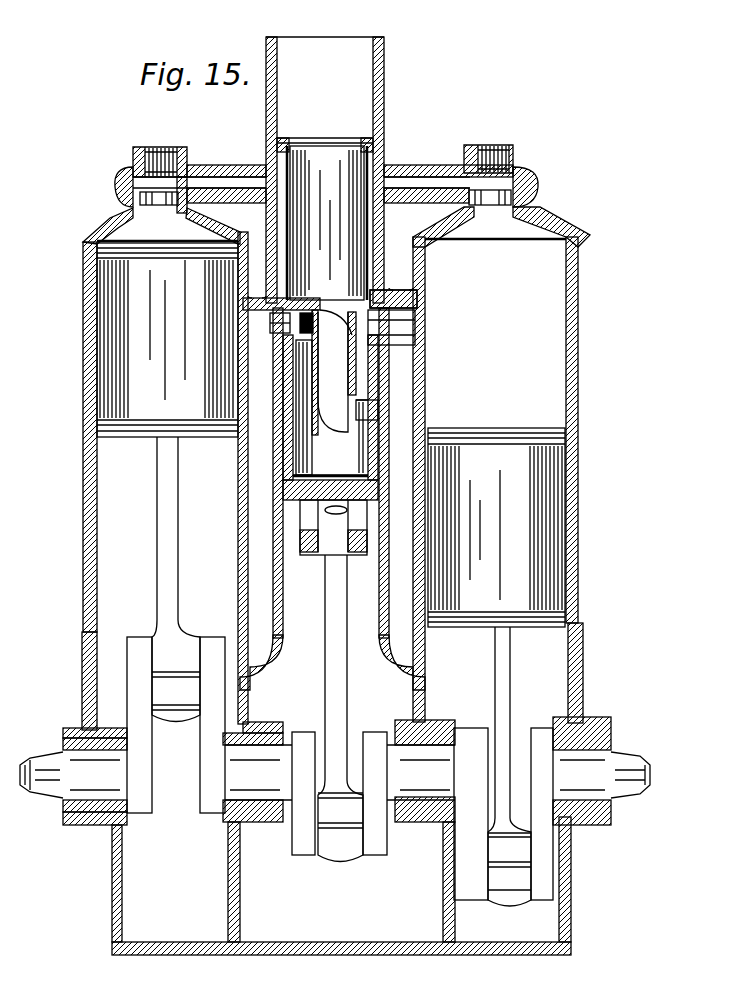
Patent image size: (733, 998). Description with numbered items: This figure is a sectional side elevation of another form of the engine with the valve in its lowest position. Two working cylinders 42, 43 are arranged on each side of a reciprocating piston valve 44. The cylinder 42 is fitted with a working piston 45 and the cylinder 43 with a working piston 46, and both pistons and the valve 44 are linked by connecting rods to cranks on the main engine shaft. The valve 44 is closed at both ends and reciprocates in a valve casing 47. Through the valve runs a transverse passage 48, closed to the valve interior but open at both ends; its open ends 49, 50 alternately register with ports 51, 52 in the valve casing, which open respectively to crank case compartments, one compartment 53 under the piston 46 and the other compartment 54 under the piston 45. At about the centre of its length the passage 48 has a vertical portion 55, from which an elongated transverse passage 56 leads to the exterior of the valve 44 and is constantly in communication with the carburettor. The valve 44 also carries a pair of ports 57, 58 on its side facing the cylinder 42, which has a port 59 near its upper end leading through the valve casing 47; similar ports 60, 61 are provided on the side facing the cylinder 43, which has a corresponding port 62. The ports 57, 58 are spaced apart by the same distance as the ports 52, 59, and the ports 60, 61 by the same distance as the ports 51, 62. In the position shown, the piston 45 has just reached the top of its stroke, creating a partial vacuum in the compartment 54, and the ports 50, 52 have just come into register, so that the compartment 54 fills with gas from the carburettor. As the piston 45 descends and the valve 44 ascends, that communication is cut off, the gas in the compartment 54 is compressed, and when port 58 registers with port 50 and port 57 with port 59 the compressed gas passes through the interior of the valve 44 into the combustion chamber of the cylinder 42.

The working cylinder 42 is at (110, 222).
The working cylinder 43 is at (505, 220).
The reciprocating piston valve 44 is at (338, 276).
The working piston 45 is at (128, 317).
The working piston 46 is at (510, 535).
The valve casing 47 is at (382, 106).
The transverse passage 48 is at (372, 452).
The open end of transverse passage 49 is at (378, 416).
The open end of transverse passage 50 is at (290, 316).
The valve casing port 51 is at (383, 330).
The valve casing port 52 is at (270, 318).
The crank case compartment 53 is at (548, 670).
The crank case compartment 54 is at (108, 655).
The vertical portion of passage 55 is at (292, 380).
The transverse passage 56 is at (330, 392).
The valve port 57 is at (270, 237).
The valve port 58 is at (290, 422).
The cylinder port 59 is at (245, 186).
The valve port 60 is at (381, 171).
The valve port 61 is at (421, 303).
The cylinder port 62 is at (438, 180).